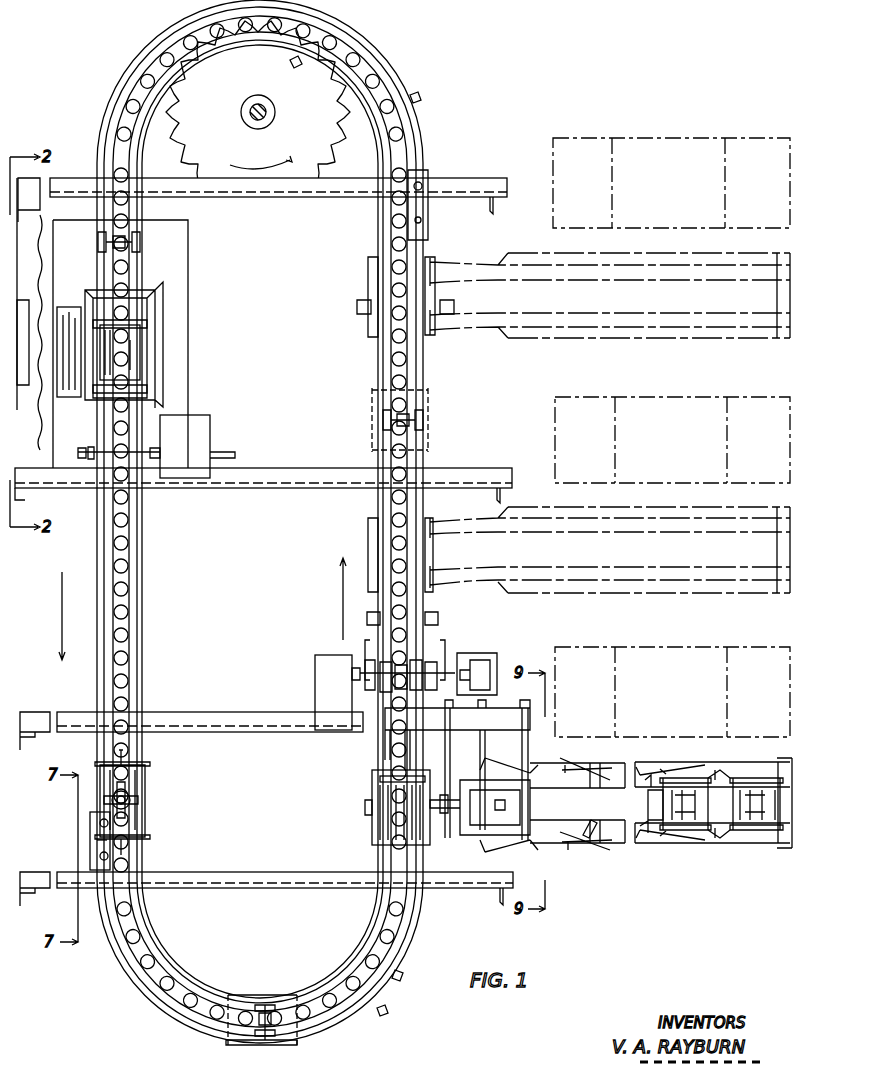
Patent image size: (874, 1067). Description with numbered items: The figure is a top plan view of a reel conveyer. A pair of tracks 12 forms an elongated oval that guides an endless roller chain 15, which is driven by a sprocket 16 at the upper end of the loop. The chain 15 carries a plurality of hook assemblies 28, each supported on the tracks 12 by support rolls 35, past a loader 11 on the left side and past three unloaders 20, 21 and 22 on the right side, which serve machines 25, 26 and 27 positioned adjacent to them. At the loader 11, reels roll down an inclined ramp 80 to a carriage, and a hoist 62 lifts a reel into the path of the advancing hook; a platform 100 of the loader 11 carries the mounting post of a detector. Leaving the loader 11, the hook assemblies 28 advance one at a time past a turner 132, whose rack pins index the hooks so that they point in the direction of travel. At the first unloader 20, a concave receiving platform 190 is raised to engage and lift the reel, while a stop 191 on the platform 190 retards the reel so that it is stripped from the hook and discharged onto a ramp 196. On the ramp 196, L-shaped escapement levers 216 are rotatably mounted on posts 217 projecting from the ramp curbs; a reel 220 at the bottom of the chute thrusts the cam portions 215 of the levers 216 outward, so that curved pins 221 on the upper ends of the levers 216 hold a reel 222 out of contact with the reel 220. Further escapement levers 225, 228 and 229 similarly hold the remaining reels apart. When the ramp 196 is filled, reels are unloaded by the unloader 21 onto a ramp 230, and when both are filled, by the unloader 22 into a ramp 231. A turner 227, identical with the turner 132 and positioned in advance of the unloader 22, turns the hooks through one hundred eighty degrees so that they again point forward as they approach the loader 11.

The loader 11 is at (202, 343).
The tracks 12 is at (135, 105).
The endless roller chain 15 is at (355, 95).
The sprocket 16 is at (240, 170).
The unloader 20 is at (364, 847).
The unloader 21 is at (363, 556).
The unloader 22 is at (360, 285).
The machine 25 is at (630, 650).
The machine 26 is at (630, 398).
The machine 27 is at (634, 136).
The hook assembly 28 is at (438, 406).
The support rolls 35 is at (98, 240).
The hoist 62 is at (163, 392).
The inclined ramp 80 is at (70, 312).
The platform 100 is at (188, 405).
The turner 132 is at (88, 852).
The concave receiving platform 190 is at (371, 826).
The stop 191 is at (380, 779).
The ramp 196 is at (600, 840).
The cam portions 215 is at (780, 785).
The L-shaped escapement levers 216 is at (755, 775).
The posts 217 is at (716, 770).
The reel 220 is at (712, 838).
The curved pins 221 is at (685, 768).
The reel 222 is at (645, 838).
The escapement levers 225 is at (652, 792).
The turner 227 is at (435, 182).
The escapement lever 228 is at (565, 760).
The escapement lever 229 is at (500, 790).
The ramp 230 is at (475, 587).
The ramp 231 is at (538, 333).